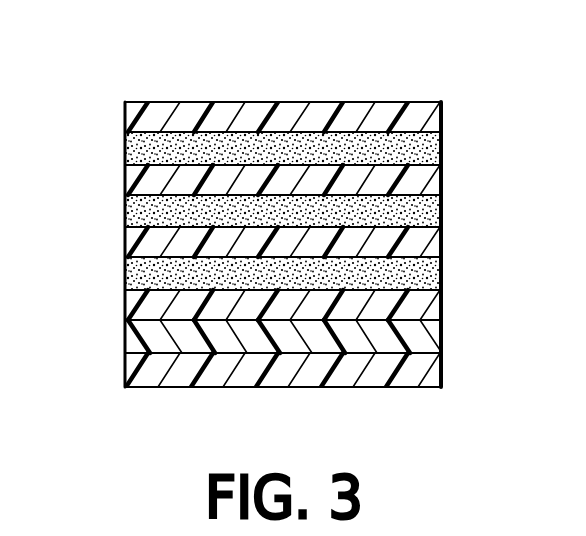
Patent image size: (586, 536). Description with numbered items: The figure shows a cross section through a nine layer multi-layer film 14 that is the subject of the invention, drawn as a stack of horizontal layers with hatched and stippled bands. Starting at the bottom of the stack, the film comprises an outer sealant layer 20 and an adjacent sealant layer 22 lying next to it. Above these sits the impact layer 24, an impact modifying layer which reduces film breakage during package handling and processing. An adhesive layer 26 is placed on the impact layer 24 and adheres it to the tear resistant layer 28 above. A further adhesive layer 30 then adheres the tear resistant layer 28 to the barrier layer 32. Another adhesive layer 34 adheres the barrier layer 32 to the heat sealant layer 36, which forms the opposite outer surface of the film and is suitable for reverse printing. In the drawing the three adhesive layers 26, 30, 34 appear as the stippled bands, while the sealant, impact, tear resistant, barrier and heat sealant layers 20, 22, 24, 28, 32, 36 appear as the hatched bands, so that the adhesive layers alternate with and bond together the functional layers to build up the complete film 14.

The multi-layer film 14 is at (95, 111).
The outer sealant layer 20 is at (423, 378).
The adjacent sealant layer 22 is at (427, 340).
The impact layer 24 is at (430, 307).
The adhesive layer 26 is at (433, 268).
The tear resistant layer 28 is at (430, 240).
The adhesive layer 30 is at (430, 212).
The barrier layer 32 is at (422, 183).
The adhesive layer 34 is at (427, 148).
The heat sealant layer 36 is at (398, 102).